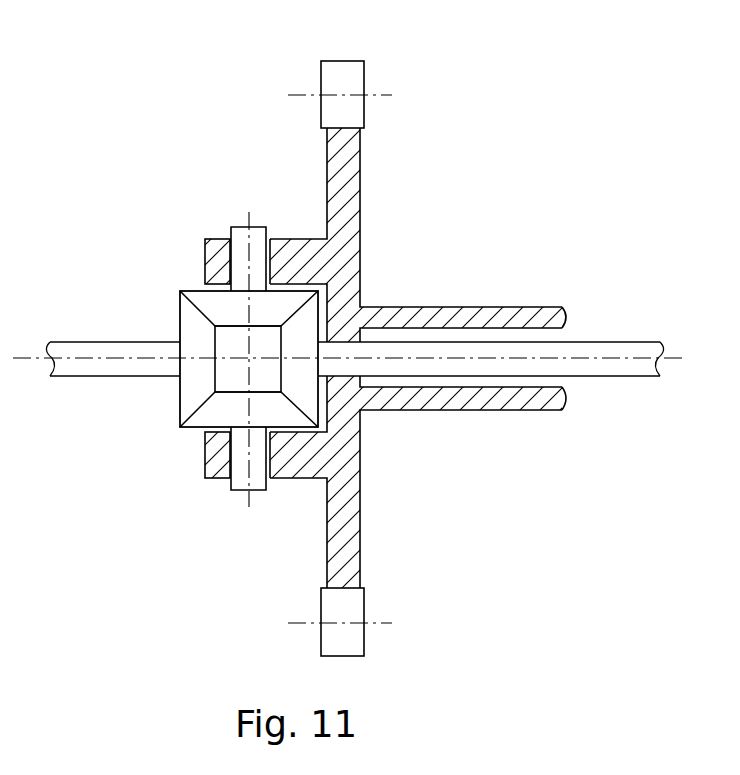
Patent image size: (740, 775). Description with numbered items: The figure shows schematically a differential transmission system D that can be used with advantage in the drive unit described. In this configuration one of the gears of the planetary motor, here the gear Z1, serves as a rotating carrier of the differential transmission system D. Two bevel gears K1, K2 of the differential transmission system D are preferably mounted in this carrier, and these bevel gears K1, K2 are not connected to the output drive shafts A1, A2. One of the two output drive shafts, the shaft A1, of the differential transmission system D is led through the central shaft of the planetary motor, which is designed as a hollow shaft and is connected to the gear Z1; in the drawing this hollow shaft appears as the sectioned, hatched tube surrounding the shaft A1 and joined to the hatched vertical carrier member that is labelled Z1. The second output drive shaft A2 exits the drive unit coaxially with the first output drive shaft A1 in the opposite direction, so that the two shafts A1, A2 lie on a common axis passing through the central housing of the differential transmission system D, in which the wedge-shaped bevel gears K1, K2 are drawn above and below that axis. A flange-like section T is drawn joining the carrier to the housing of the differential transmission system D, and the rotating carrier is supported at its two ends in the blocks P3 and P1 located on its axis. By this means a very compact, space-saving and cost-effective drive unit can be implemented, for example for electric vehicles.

The bearing support P3 is at (338, 82).
The bearing support P1 is at (343, 638).
The carrier / flange T is at (294, 236).
The gear Z1 is at (430, 358).
The output drive shaft A1 is at (612, 358).
The output drive shaft A2 is at (85, 365).
The differential transmission system D is at (196, 368).
The bevel gear K1 is at (205, 301).
The bevel gear K2 is at (213, 417).